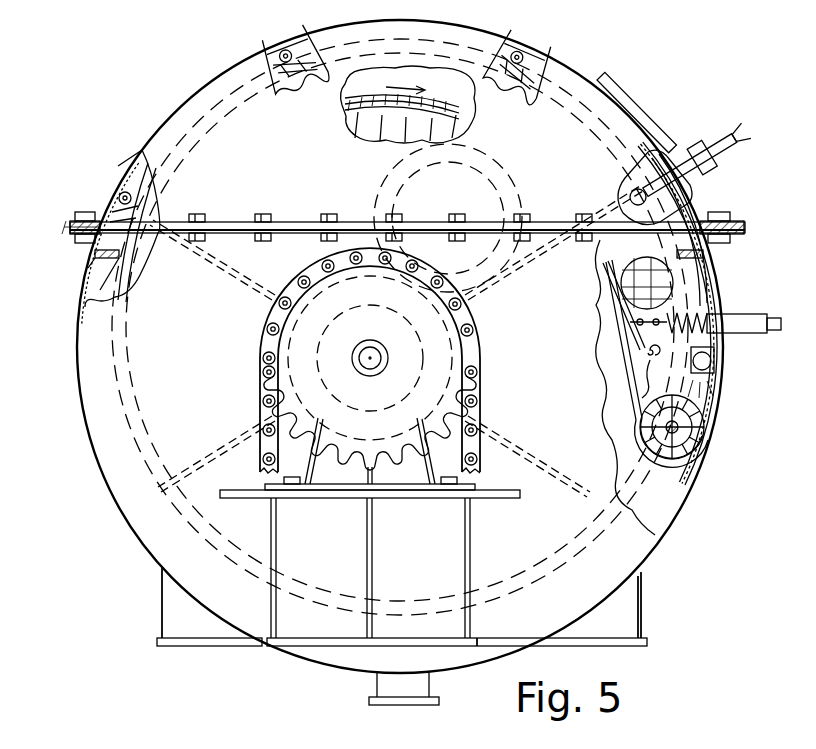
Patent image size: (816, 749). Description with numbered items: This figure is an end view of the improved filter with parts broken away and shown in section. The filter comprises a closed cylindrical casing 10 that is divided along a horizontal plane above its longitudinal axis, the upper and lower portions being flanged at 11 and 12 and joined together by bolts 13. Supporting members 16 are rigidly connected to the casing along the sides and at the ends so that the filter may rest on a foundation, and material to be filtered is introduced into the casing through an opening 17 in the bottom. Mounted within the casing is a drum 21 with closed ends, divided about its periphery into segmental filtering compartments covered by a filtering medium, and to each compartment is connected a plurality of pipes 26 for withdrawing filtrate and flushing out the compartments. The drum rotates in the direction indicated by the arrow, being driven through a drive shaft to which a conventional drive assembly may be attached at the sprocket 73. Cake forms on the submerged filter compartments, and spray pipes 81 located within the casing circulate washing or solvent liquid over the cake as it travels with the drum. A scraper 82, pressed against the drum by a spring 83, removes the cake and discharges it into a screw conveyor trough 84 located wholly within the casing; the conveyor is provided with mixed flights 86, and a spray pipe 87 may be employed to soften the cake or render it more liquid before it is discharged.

The closed cylindrical casing 10 is at (473, 28).
The flange 11 is at (68, 226).
The flange 12 is at (66, 238).
The bolts 13 is at (725, 221).
The supporting members 16 is at (160, 617).
The opening 17 is at (376, 690).
The drum 21 is at (356, 90).
The pipes 26 is at (383, 125).
The sprocket 73 is at (388, 419).
The spray pipes 81 is at (281, 34).
The scraper 82 is at (640, 318).
The spring 83 is at (689, 337).
The screw conveyor trough 84 is at (690, 470).
The mixed flights 86 is at (702, 420).
The spray pipe 87 is at (715, 364).